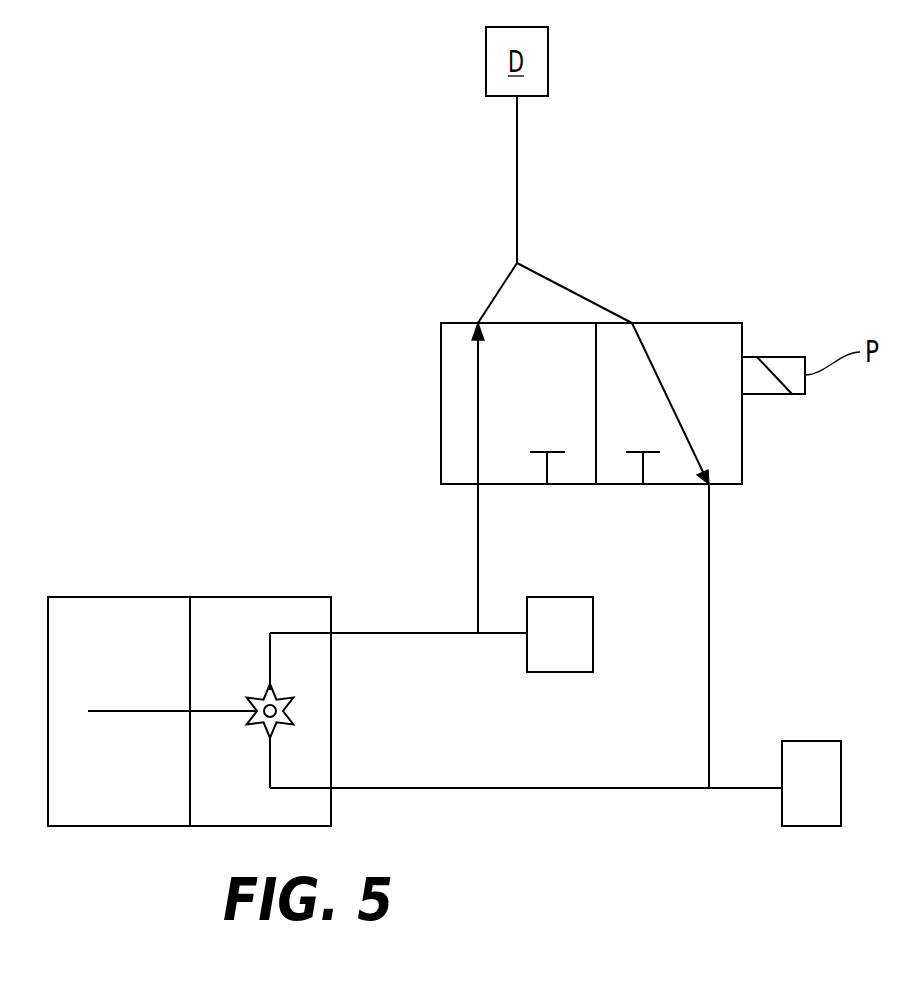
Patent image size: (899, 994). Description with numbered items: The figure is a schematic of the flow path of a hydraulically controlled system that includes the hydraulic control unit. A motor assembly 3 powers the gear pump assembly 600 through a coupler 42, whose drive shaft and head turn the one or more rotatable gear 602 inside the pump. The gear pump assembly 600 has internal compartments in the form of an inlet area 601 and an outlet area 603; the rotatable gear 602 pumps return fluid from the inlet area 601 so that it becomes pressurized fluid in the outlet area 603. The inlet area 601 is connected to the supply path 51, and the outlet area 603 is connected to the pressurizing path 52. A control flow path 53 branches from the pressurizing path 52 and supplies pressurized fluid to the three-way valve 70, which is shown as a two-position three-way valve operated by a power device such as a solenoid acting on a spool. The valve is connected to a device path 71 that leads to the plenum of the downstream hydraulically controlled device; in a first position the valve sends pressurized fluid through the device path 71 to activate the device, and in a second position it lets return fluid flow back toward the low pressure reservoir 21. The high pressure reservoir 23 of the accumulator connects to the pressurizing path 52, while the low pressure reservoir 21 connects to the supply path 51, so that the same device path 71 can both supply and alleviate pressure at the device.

The motor assembly 3 is at (115, 597).
The low pressure reservoir 21 is at (812, 741).
The high pressure reservoir 23 is at (568, 597).
The coupler 42 is at (130, 711).
The supply path 51 is at (397, 788).
The pressurizing path 52 is at (397, 633).
The control flow path 53 is at (478, 545).
The three-way valve 70 is at (718, 323).
The device path 71 is at (517, 200).
The gear pump assembly 600 is at (247, 597).
The inlet area 601 is at (305, 790).
The rotatable gear 602 is at (268, 722).
The outlet area 603 is at (307, 634).